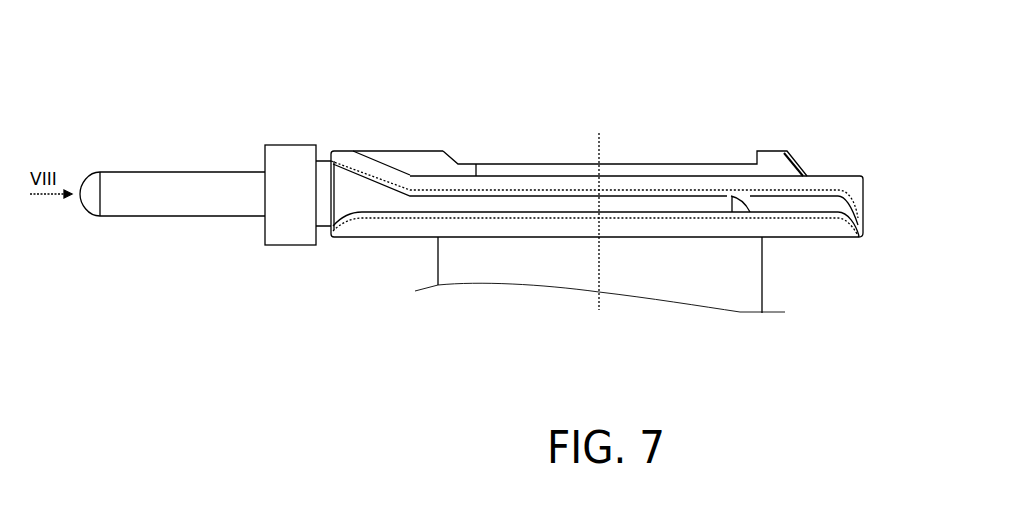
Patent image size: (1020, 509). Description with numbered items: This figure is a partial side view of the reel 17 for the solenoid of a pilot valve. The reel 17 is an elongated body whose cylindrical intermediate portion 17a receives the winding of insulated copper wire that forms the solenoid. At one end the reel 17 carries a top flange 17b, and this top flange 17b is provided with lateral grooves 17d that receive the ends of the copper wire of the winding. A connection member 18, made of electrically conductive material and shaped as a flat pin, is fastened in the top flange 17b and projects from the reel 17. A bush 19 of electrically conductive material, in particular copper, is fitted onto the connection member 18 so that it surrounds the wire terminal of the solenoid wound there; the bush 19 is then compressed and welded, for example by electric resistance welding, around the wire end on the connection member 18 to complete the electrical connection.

The reel 17 is at (693, 128).
The cylindrical intermediate portion 17a is at (745, 280).
The top flange 17b is at (829, 178).
The lateral grooves 17d is at (675, 197).
The connection members 18 is at (191, 183).
The bushes 19 is at (296, 160).